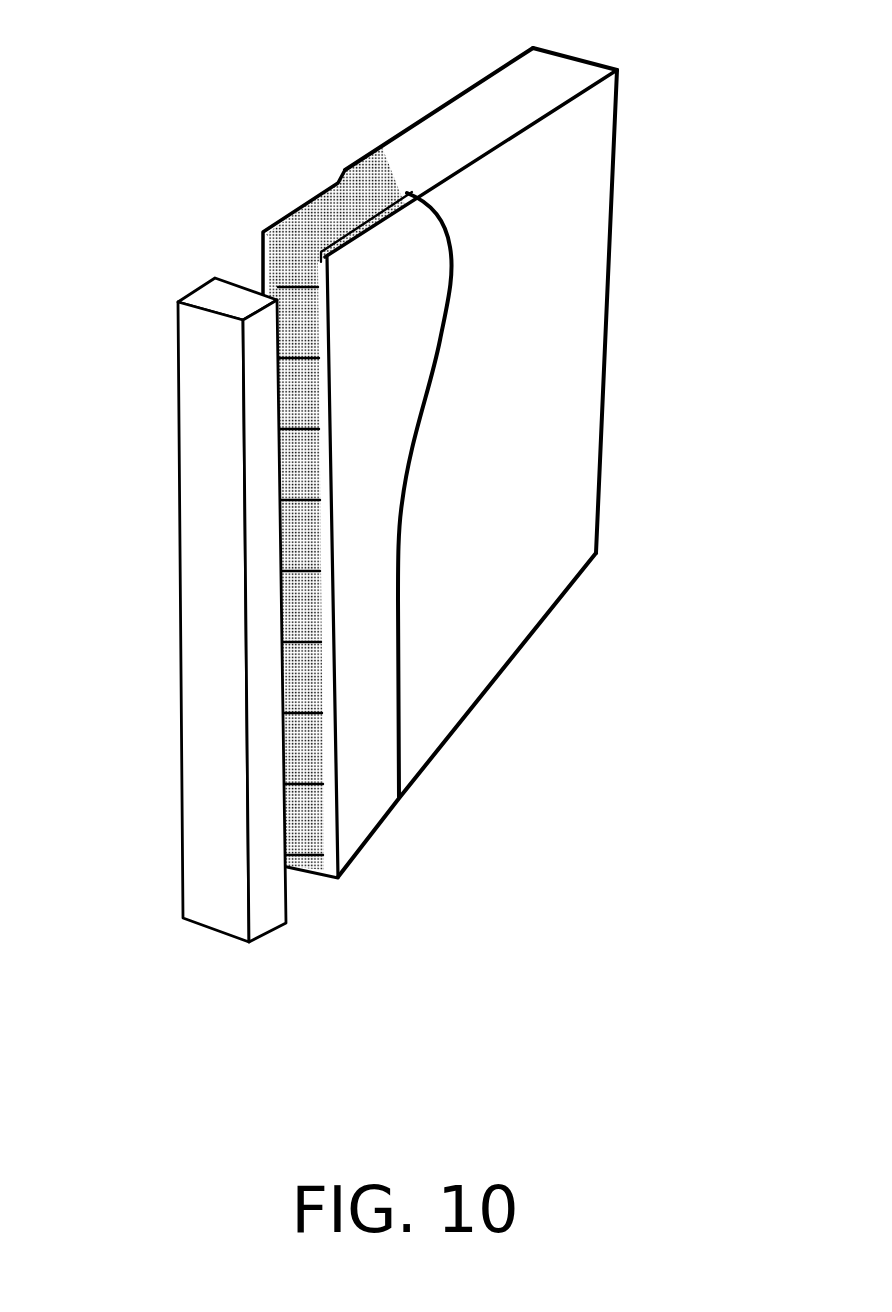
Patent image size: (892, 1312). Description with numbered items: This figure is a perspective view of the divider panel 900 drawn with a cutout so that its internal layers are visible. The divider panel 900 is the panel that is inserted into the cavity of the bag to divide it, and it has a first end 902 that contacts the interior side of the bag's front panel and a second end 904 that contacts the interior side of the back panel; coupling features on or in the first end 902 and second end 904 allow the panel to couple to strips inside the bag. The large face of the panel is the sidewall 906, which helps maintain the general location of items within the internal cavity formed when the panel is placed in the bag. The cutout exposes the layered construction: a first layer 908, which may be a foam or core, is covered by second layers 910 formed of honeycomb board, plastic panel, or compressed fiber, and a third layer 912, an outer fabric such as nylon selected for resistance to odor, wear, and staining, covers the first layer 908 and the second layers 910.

The divider panel 900 is at (129, 58).
The first end 902 is at (207, 470).
The second end 904 is at (534, 462).
The sidewall 906 is at (560, 377).
The first layer 908 is at (317, 208).
The second layers 910 is at (260, 236).
The third layer 912 is at (378, 160).